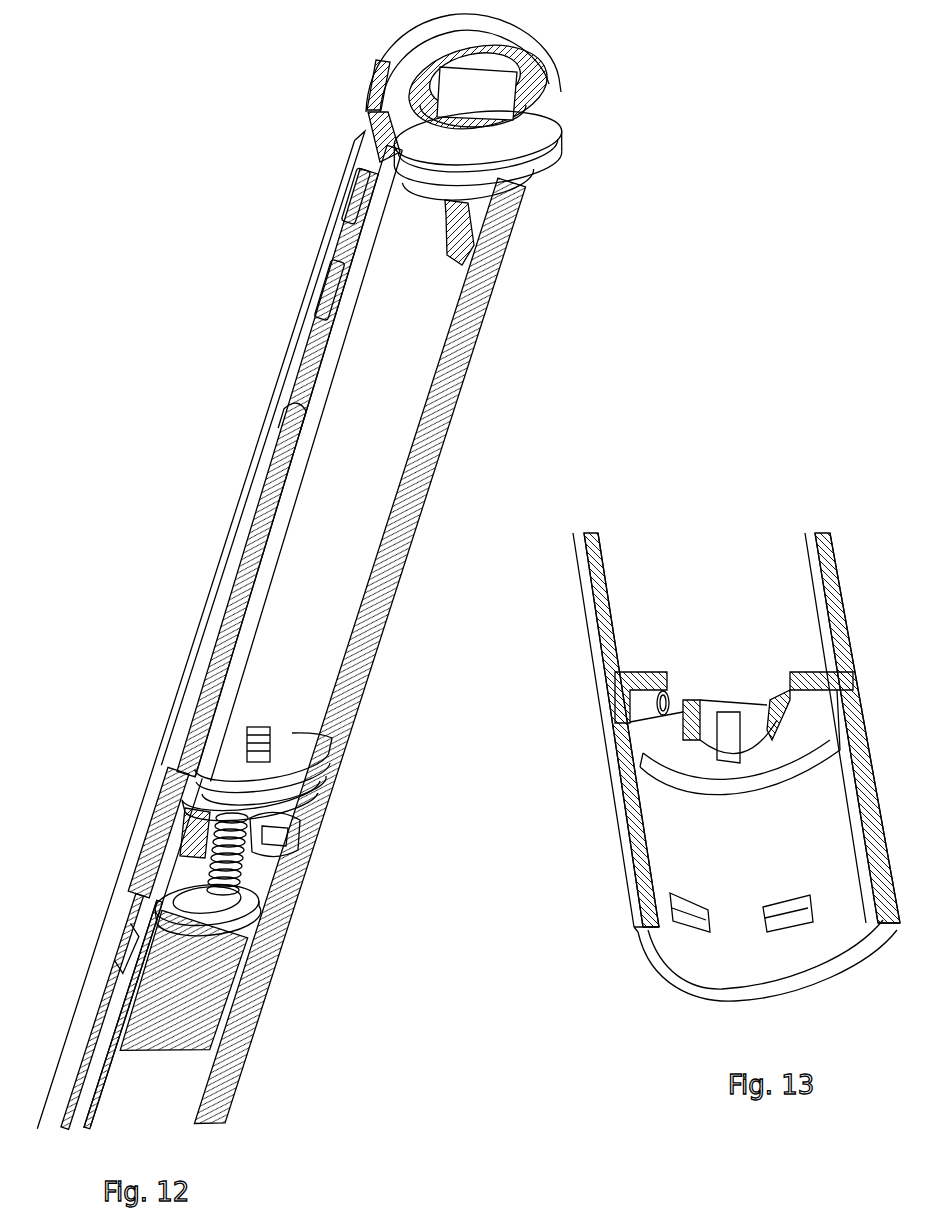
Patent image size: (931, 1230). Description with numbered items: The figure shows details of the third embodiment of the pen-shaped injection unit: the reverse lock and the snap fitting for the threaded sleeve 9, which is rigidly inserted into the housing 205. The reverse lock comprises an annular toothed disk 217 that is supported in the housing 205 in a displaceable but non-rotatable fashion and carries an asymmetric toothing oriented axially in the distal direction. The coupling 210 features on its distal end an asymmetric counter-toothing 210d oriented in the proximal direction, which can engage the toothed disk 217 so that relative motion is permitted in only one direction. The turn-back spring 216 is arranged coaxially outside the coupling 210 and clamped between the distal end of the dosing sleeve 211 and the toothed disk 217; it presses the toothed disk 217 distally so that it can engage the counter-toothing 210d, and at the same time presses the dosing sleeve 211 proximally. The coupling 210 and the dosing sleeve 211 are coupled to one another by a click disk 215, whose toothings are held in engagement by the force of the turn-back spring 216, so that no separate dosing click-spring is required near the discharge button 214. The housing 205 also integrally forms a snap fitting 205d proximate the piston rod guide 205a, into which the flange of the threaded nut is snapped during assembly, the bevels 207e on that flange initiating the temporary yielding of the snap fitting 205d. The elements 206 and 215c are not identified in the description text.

In FIG. 12, the threaded sleeve 9 is at (305, 375).
In FIG. 13, the housing 205 is at (585, 535).
In FIG. 12, the piston rod guide 205a is at (157, 883).
In FIG. 13, the piston rod guide 205a is at (643, 755).
In FIG. 13, the snap fitting 205d is at (643, 708).
In FIG. 12, the outer sleeve 206 is at (205, 652).
In FIG. 12, the bevels 207e is at (157, 862).
In FIG. 12, the coupling 210 is at (420, 365).
In FIG. 12, the asymmetric counter-toothing 210d is at (310, 846).
In FIG. 12, the dosing sleeve 211 is at (290, 497).
In FIG. 12, the discharge button 214 is at (478, 30).
In FIG. 12, the click disk 215 is at (527, 155).
In FIG. 12, the flange cut section 215c is at (405, 122).
In FIG. 12, the turn-back spring 216 is at (305, 772).
In FIG. 12, the annular toothed disk 217 is at (173, 798).